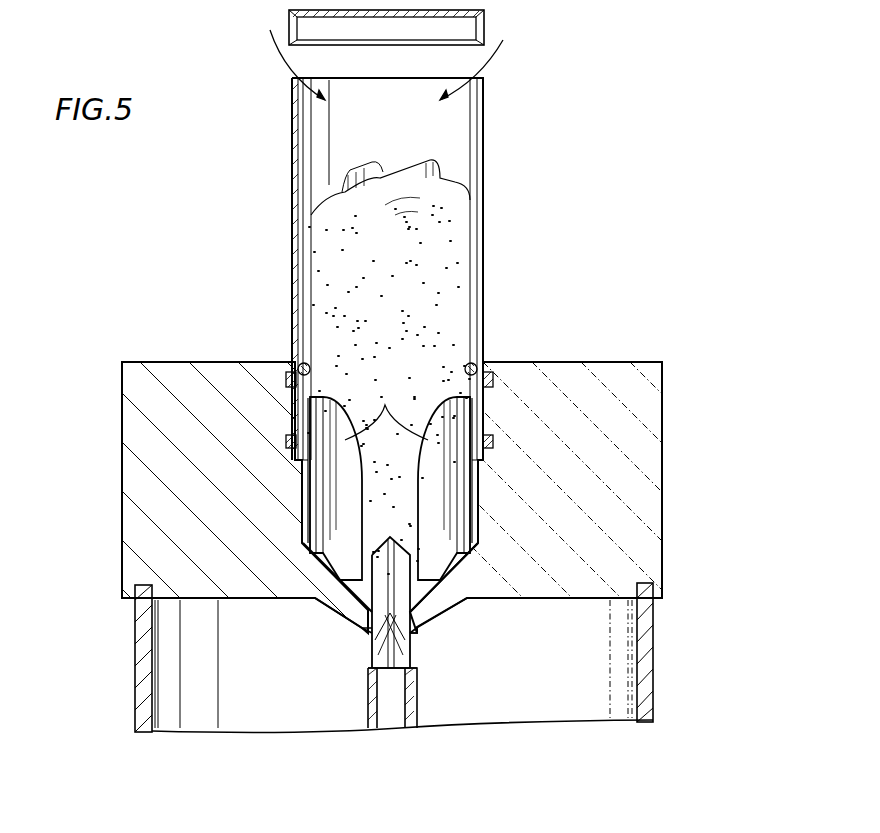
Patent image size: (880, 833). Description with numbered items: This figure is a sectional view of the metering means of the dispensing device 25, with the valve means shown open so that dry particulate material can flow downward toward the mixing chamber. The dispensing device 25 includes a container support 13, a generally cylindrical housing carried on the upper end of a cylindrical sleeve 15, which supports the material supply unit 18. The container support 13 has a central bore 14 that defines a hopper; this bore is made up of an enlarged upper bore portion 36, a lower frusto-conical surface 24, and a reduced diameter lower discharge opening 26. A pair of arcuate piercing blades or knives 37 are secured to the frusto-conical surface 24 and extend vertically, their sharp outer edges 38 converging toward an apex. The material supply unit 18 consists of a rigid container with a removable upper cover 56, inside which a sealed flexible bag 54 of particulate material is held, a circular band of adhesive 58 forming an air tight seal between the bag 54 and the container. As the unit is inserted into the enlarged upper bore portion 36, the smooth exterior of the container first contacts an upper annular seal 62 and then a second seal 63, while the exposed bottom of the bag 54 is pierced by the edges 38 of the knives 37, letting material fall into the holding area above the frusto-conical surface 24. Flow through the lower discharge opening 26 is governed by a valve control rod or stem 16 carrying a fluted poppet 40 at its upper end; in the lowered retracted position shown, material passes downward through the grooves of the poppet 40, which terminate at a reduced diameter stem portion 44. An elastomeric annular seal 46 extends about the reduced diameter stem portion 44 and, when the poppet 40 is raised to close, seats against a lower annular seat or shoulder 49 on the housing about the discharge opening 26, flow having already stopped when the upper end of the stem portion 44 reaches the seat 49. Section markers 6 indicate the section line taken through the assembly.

The section line 6- 6 is at (245, 505).
The container support 13 is at (645, 443).
The central bore 14 is at (480, 490).
The cylindrical sleeve 15 is at (653, 688).
The valve control rod 16 is at (403, 712).
The material supply unit 18 is at (483, 153).
The frusto-conical surface 24 is at (440, 558).
The dispensing device 25 is at (686, 488).
The lower discharge opening 26 is at (372, 680).
The enlarged upper bore portion 36 is at (300, 415).
The arcuate piercing blades 37 is at (332, 489).
The sharp outer edges 38 is at (386, 411).
The valve member or poppet 40 is at (370, 636).
The reduced diameter stem portion 44 is at (372, 653).
The elastomeric annular seal 46 is at (413, 665).
The lower annular seat 49 is at (418, 633).
The flexible bag 54 is at (450, 255).
The upper lid or cover 56 is at (484, 25).
The circular band of adhesive 58 is at (478, 368).
The upper annular seal 62 is at (493, 380).
The seal 63 is at (493, 440).